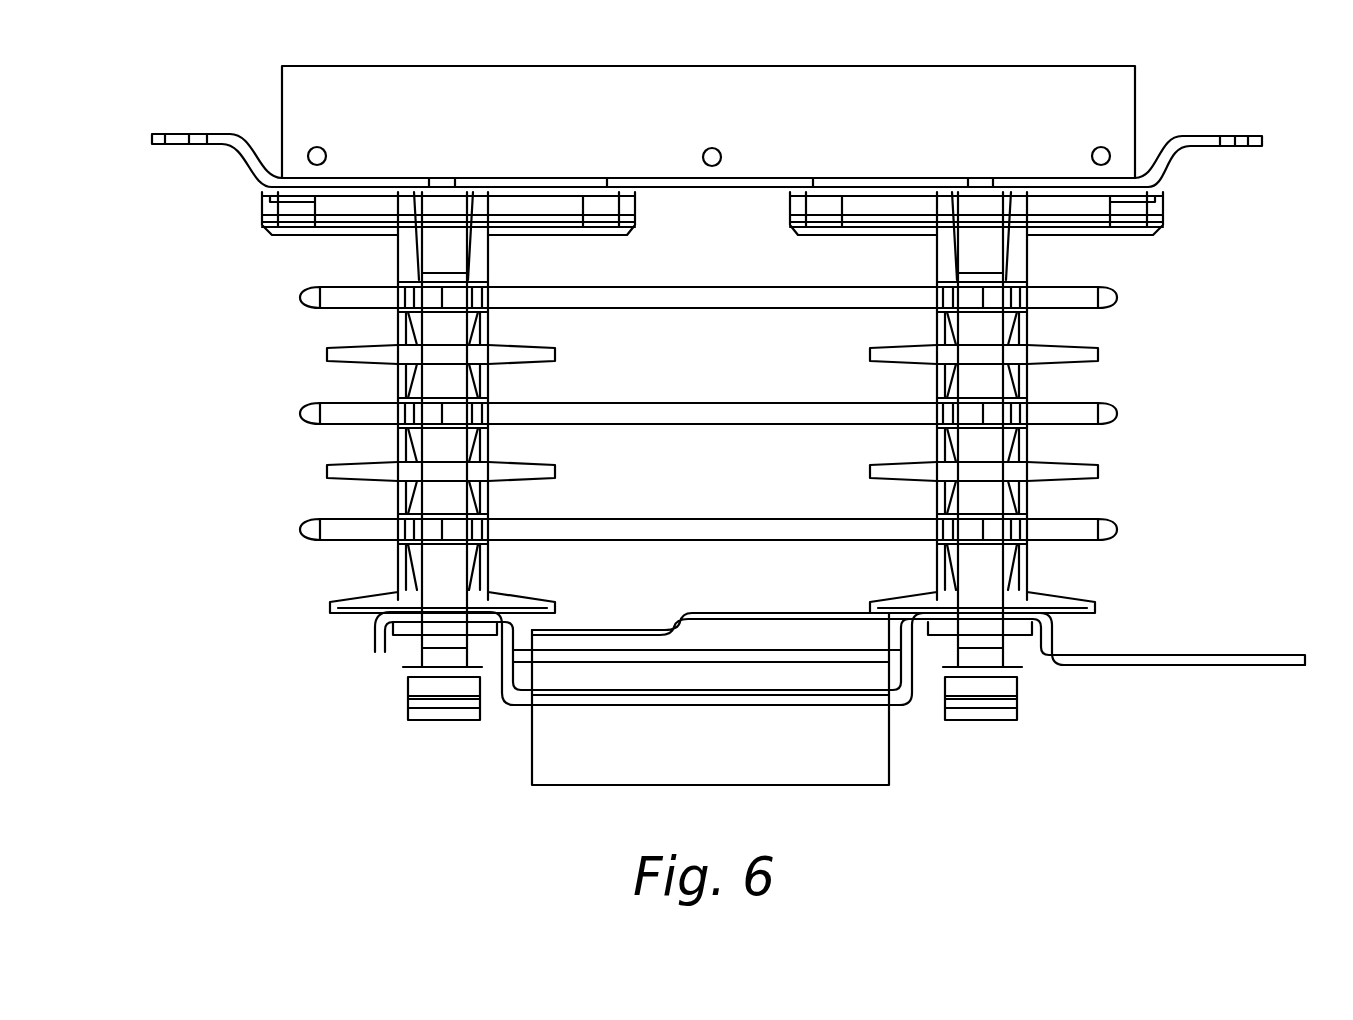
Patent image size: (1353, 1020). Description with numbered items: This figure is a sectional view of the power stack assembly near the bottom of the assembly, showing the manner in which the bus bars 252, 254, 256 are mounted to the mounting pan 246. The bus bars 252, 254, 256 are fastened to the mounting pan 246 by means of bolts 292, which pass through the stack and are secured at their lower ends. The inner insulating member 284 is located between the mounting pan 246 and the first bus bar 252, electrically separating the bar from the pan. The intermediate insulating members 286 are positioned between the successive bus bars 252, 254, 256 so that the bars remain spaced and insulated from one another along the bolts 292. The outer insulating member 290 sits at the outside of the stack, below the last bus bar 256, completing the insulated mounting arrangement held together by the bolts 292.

The mounting pan 246 is at (1208, 133).
The inner insulating member 284 is at (1028, 274).
The bus bar 252 is at (1123, 293).
The bus bar 254 is at (1123, 410).
The bus bar 256 is at (1123, 527).
The intermediate insulating members 286 is at (1093, 355).
The outer insulating member 290 is at (1098, 608).
The bolts 292 is at (438, 722).